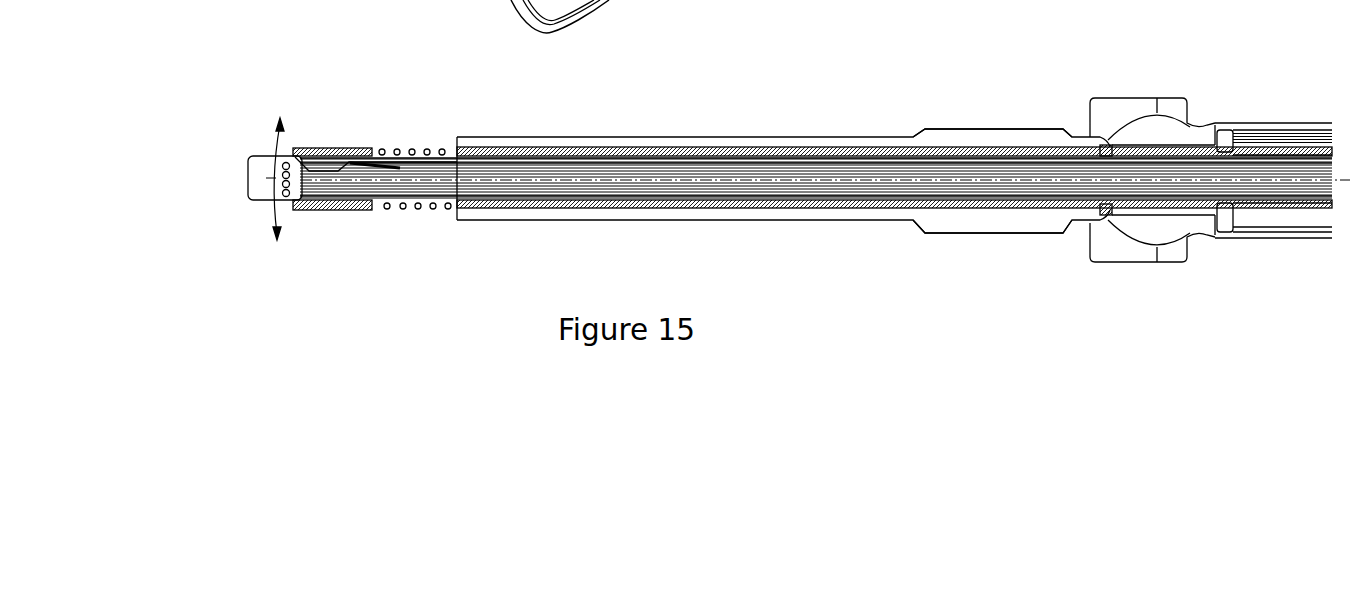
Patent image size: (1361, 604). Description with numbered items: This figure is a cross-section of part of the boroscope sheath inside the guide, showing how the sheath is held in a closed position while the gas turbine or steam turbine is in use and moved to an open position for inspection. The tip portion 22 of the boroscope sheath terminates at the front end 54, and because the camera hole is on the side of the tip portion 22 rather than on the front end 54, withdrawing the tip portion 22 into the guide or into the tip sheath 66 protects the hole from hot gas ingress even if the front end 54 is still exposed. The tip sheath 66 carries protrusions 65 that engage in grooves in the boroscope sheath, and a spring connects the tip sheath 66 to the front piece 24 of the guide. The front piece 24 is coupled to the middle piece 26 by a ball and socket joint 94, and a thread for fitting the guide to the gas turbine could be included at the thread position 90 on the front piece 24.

The tip portion 22 is at (435, 148).
The front piece 24 is at (880, 137).
The middle piece 26 is at (1320, 122).
The front end 54 is at (248, 176).
The protrusions 65 is at (612, 0).
The tip sheath 66 is at (328, 212).
The thread position 90 is at (1000, 232).
The ball and socket joint 94 is at (1122, 128).